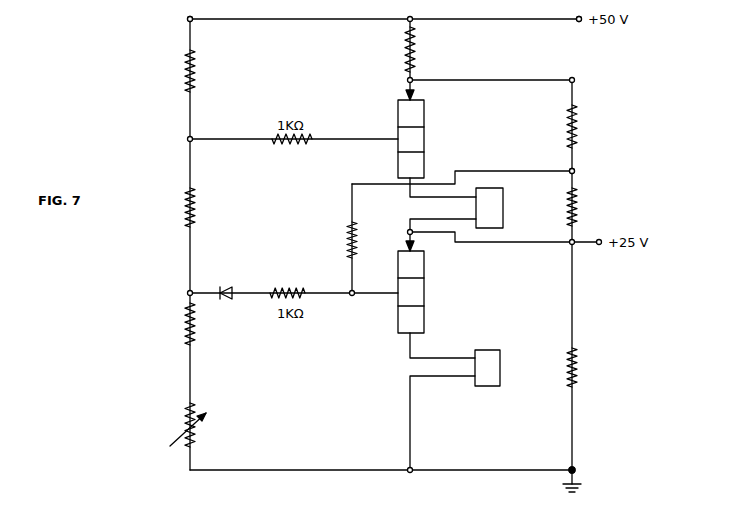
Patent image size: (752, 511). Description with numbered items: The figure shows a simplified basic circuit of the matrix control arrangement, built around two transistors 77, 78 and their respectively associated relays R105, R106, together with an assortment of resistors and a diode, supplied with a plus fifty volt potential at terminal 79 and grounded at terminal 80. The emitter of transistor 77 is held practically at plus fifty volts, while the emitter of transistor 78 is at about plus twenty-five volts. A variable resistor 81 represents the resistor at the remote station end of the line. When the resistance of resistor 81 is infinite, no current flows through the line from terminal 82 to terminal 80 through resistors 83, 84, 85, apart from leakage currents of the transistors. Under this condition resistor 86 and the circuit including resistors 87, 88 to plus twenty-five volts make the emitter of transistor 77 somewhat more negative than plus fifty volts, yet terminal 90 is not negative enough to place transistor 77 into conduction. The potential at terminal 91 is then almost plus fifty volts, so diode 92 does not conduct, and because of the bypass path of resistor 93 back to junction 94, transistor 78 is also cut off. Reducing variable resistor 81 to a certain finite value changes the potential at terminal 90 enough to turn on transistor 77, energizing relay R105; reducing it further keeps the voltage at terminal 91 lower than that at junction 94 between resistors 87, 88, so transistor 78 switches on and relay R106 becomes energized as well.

The transistor 77 is at (425, 115).
The transistor 78 is at (425, 297).
The terminal 79 is at (578, 27).
The terminal 80 is at (577, 468).
The variable resistor 81 is at (184, 409).
The terminal 82 is at (188, 22).
The resistor 83 is at (185, 71).
The resistor 84 is at (183, 205).
The resistor 85 is at (184, 324).
The resistor 86 is at (405, 48).
The resistor 87 is at (577, 108).
The resistor 88 is at (577, 187).
The terminal 90 is at (191, 142).
The terminal 91 is at (188, 293).
The diode 92 is at (228, 287).
The resistor 93 is at (352, 222).
The junction 94 is at (576, 172).
The relay R105 is at (504, 205).
The relay R106 is at (501, 368).